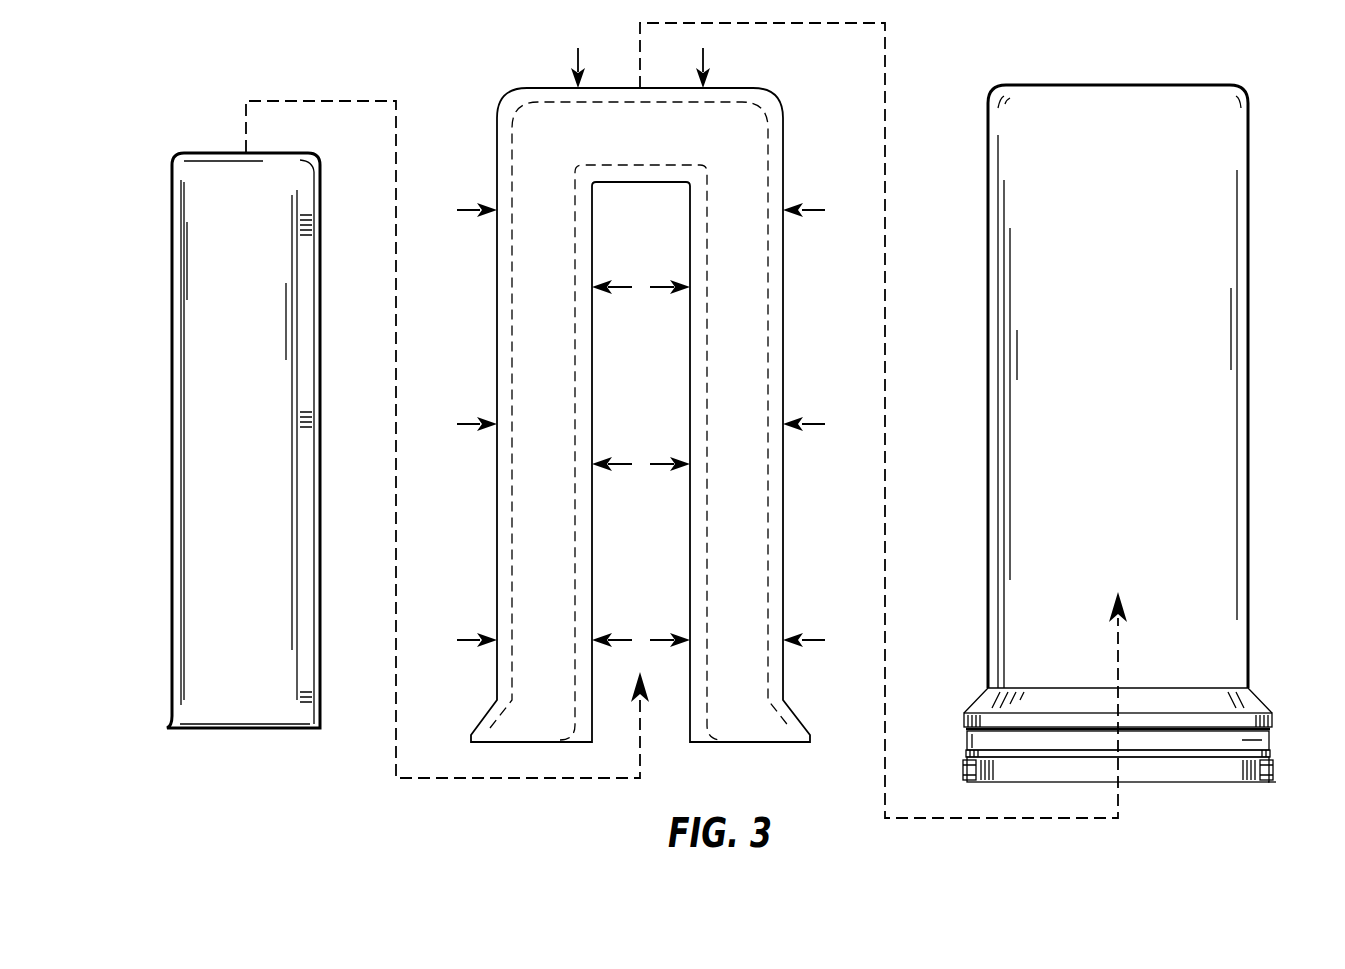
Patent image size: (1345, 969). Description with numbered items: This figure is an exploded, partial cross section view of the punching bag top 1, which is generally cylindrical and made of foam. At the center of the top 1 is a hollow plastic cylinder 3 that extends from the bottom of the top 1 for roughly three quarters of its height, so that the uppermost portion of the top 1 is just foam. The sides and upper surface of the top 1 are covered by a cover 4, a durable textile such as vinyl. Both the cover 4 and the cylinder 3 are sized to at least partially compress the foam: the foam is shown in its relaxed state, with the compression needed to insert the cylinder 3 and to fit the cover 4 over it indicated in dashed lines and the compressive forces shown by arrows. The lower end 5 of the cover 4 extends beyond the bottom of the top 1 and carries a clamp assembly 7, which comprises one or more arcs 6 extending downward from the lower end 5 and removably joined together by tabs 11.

The top 1 is at (747, 317).
The cylinder 3 is at (207, 273).
The cover 4 is at (1210, 328).
The lower end 5 is at (1270, 740).
The arc 6 is at (1190, 772).
The clamp assembly 7 is at (1274, 792).
The tab 11 is at (963, 773).